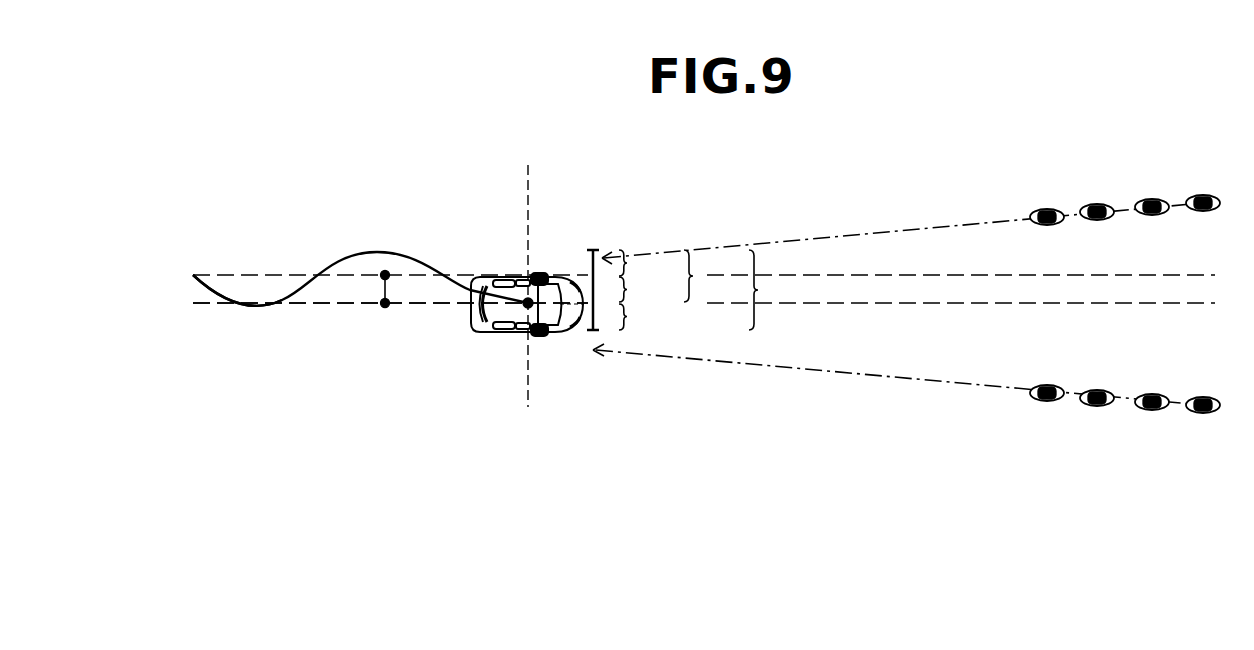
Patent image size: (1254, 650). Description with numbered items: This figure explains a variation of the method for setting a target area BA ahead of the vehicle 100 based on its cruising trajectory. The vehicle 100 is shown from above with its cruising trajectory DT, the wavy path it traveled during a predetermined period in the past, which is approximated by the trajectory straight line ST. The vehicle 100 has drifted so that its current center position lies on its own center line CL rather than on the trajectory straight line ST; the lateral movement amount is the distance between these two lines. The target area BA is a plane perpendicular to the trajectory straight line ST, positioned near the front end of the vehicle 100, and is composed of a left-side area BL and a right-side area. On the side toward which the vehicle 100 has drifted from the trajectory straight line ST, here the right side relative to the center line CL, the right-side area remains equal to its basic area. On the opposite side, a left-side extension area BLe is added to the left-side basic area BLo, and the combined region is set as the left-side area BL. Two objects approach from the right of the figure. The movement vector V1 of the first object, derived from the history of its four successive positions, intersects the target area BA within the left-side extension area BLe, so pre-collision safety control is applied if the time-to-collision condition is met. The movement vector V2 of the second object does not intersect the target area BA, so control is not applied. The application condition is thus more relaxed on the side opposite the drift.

The trajectory straight line ST is at (214, 275).
The cruising trajectory DT is at (378, 252).
The center line CL is at (303, 303).
The vehicle 100 is at (488, 277).
The movement vector V1 is at (888, 232).
The movement vector V2 is at (890, 378).
The left-side extension area BLe is at (645, 263).
The left-side basic area BLo is at (645, 289).
The left-side area BL is at (703, 276).
The target area BA is at (770, 290).